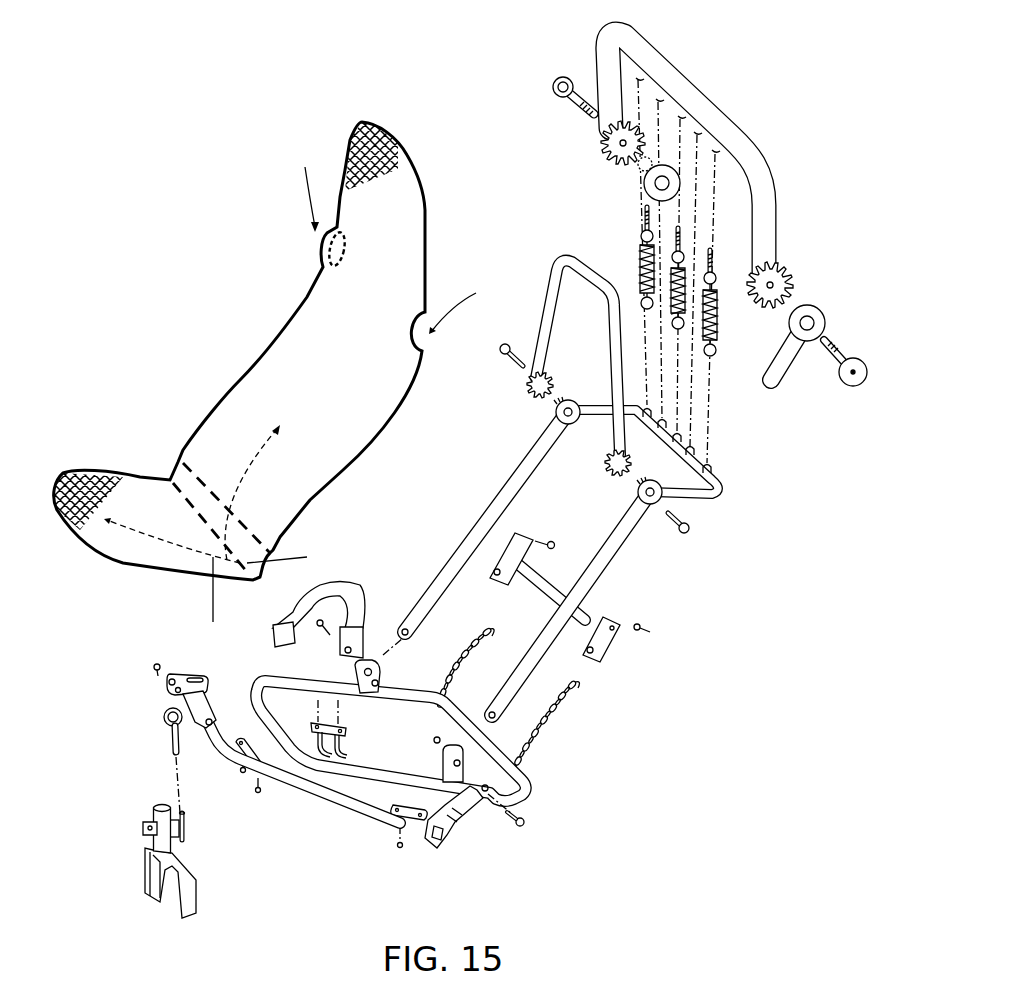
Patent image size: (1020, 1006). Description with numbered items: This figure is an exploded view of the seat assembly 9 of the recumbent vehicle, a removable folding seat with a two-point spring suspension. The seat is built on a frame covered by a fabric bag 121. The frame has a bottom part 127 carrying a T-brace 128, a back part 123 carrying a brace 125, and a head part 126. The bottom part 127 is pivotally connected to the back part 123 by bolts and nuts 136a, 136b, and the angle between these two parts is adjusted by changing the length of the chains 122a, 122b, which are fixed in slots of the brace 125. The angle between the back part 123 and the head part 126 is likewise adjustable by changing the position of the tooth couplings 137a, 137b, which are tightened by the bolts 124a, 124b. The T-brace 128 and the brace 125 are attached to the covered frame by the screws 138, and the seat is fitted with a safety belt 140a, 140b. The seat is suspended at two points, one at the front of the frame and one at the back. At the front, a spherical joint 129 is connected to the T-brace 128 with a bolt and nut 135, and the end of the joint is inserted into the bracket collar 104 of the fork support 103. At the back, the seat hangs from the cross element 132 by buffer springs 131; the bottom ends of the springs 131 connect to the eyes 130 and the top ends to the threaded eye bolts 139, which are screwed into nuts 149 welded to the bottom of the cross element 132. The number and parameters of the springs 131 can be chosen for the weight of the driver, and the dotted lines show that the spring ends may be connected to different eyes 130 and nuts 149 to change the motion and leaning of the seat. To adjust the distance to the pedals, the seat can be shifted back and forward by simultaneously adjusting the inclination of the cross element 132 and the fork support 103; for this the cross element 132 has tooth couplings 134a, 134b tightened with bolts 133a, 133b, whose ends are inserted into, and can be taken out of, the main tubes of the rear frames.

The seat assembly 9 is at (687, 767).
The fork support 103 is at (187, 880).
The bracket collar 104 is at (187, 838).
The fabric bag 121 is at (230, 443).
The chain 122a is at (535, 744).
The chain 122b is at (476, 627).
The back part 123 is at (608, 565).
The bolt 124a is at (679, 535).
The bolt 124b is at (503, 364).
The brace 125 is at (620, 653).
The head part 126 is at (550, 318).
The bottom part 127 is at (387, 697).
The T-brace 128 is at (323, 783).
The spherical joint 129 is at (165, 730).
The eyes 130 is at (710, 467).
The buffer springs 131 is at (640, 264).
The cross element 132 is at (690, 110).
The bolt 133a is at (850, 386).
The bolt 133b is at (558, 100).
The tooth coupling 134a is at (802, 306).
The tooth coupling 134b is at (643, 172).
The bolt and nut 135 is at (168, 697).
The bolt and nut 136a is at (527, 812).
The bolt and nut 136b is at (353, 670).
The tooth coupling 137a is at (637, 488).
The tooth coupling 137b is at (553, 403).
The screws 138 is at (645, 630).
The threaded eye bolts 139 is at (712, 232).
The safety belt 140a is at (453, 827).
The safety belt 140b is at (357, 598).
The nuts 149 is at (717, 152).